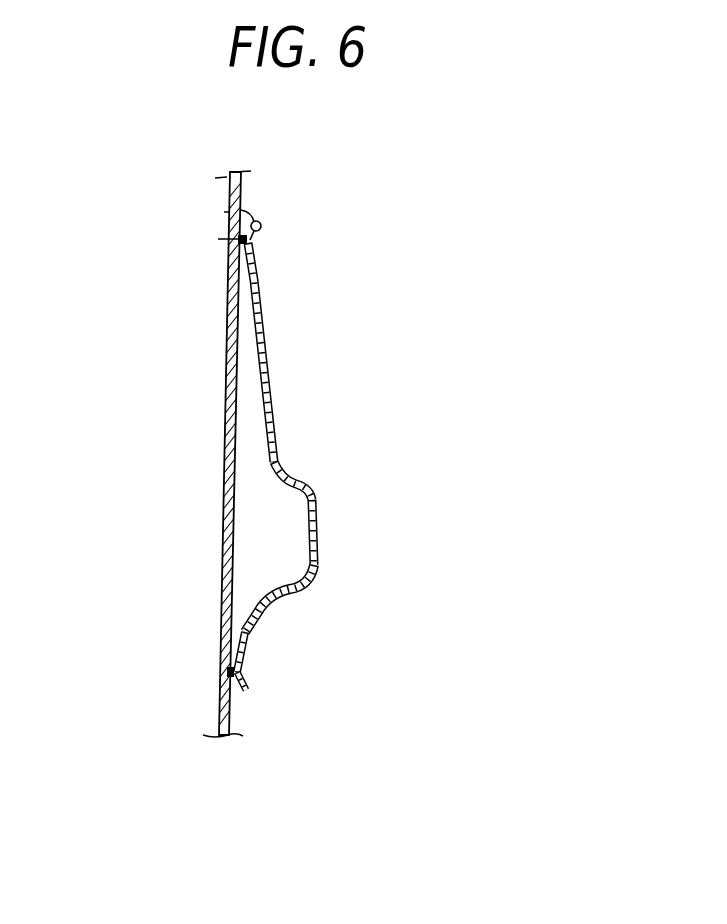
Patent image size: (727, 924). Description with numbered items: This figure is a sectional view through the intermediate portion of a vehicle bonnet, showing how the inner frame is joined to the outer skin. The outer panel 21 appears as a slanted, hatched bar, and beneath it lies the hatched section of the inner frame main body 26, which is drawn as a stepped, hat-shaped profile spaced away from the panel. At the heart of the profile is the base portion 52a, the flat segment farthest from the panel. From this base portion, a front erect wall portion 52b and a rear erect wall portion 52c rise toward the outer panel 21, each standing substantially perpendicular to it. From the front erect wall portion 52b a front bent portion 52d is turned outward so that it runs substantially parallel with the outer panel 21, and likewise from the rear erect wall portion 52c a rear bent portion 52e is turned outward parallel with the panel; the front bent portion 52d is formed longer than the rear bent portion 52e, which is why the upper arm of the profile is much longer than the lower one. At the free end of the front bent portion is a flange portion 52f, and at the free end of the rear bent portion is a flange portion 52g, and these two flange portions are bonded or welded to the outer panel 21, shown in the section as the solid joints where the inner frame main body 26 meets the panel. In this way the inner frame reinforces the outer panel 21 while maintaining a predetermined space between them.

The outer panel 21 is at (201, 523).
The inner frame main body 26 is at (370, 538).
The base portion 52a is at (320, 518).
The front erect wall portion 52b is at (307, 482).
The rear erect wall portion 52c is at (287, 590).
The front bent portion 52d is at (263, 322).
The rear bent portion 52e is at (244, 632).
The flange portion 52f is at (260, 234).
The flange portion 52g is at (247, 670).